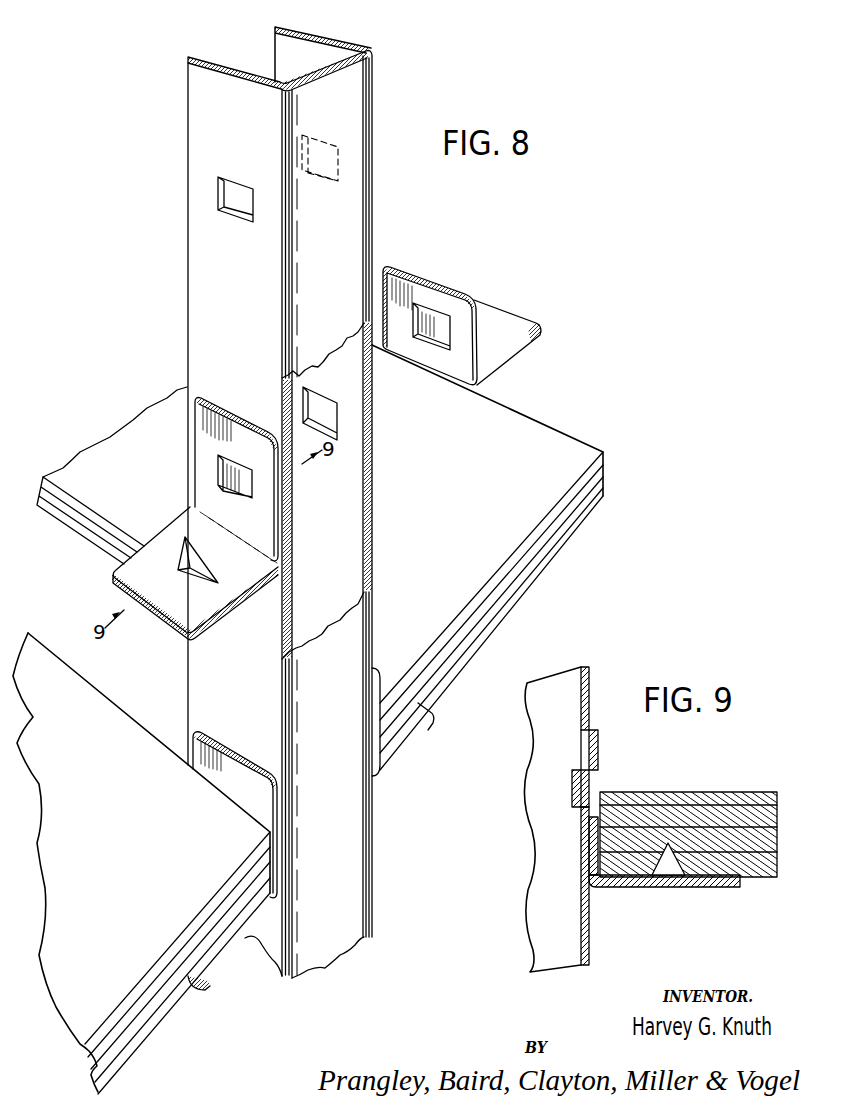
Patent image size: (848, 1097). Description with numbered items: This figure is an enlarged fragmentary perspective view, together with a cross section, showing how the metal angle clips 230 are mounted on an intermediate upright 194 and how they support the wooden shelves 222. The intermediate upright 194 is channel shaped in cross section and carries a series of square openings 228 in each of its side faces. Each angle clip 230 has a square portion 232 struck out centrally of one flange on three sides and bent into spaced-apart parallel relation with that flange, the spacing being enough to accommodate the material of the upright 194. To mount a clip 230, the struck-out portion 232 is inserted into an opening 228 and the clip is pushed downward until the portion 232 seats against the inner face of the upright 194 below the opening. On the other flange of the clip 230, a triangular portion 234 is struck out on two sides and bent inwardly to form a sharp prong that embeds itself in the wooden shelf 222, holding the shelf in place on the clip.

In FIG. 8, the intermediate upright 194 is at (360, 95).
In FIG. 9, the intermediate upright 194 is at (572, 693).
In FIG. 8, the wooden shelf 222 is at (563, 452).
In FIG. 9, the wooden shelf 222 is at (718, 793).
In FIG. 8, the square opening 228 is at (240, 192).
In FIG. 8, the angle clip 230 is at (527, 322).
In FIG. 9, the angle clip 230 is at (612, 887).
In FIG. 8, the struck-out square portion 232 is at (428, 326).
In FIG. 9, the struck-out square portion 232 is at (572, 793).
In FIG. 8, the triangular prong portion 234 is at (183, 568).
In FIG. 9, the triangular prong portion 234 is at (668, 880).